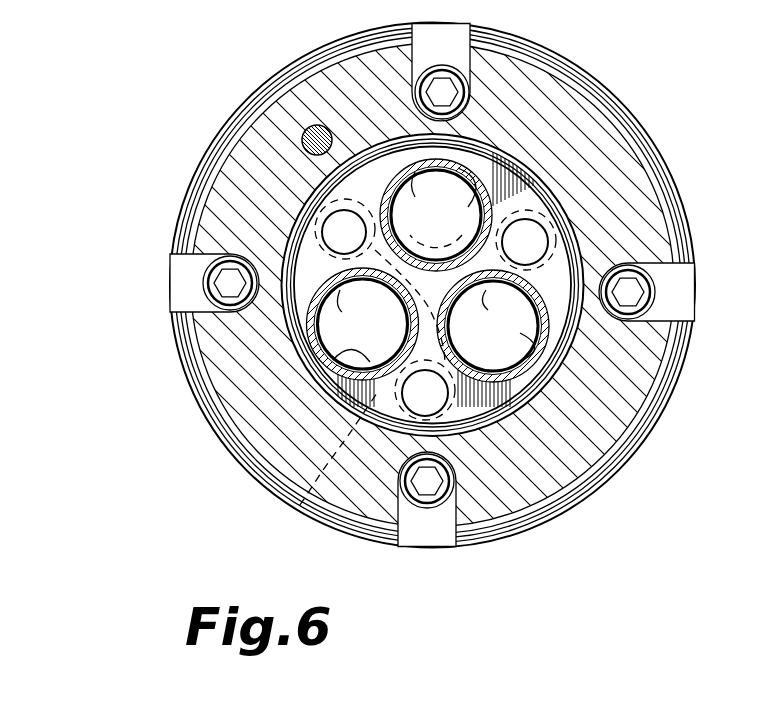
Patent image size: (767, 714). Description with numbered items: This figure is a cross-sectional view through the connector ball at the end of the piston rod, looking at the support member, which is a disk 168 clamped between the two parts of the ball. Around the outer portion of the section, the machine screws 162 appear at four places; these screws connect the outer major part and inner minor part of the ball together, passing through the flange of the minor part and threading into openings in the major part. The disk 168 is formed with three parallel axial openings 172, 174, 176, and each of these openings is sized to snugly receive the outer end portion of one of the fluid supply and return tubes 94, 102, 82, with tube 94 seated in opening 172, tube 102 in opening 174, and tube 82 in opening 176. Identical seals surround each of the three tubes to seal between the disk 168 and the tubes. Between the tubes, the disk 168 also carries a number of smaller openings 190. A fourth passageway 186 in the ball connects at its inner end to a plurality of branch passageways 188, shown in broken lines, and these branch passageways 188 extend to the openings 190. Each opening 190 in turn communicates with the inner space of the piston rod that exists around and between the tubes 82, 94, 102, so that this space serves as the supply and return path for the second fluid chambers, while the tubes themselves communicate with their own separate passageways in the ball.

The machine screws 162 is at (445, 90).
The disk 168 is at (480, 393).
The axial opening 172 is at (490, 170).
The axial opening 174 is at (320, 358).
The axial opening 176 is at (550, 327).
The fourth passageway 186 is at (293, 513).
The branch passageways 188 is at (330, 200).
The openings 190 is at (337, 228).
The tube 94 is at (436, 214).
The tube 102 is at (363, 324).
The tube 82 is at (493, 326).